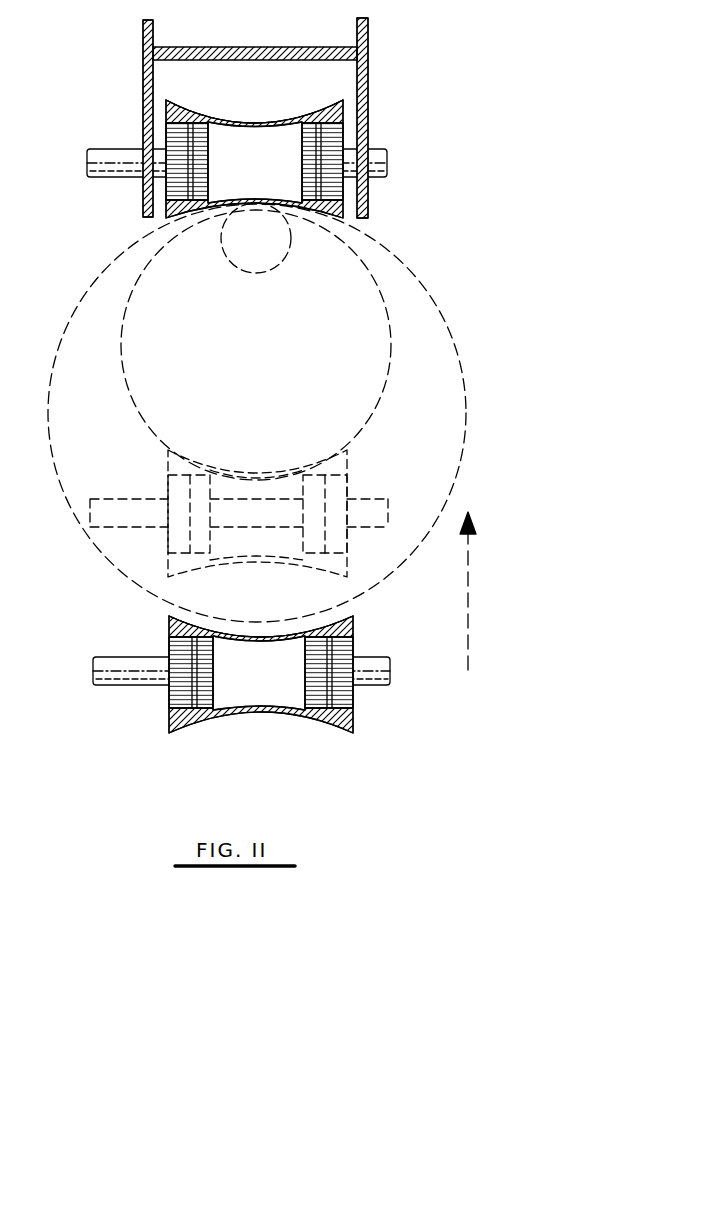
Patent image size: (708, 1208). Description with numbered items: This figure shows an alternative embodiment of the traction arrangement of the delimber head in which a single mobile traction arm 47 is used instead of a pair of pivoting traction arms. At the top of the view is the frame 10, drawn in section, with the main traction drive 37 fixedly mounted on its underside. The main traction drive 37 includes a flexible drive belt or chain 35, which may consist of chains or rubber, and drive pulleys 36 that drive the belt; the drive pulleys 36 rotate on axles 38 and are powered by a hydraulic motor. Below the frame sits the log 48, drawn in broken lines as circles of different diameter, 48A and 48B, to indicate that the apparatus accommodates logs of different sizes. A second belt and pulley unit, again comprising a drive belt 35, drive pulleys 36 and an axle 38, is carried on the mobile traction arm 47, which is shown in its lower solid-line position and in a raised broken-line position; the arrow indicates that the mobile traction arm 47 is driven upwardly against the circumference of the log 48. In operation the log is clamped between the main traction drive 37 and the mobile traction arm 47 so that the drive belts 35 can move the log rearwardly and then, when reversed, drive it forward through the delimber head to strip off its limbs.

The frame 10 is at (368, 71).
The flexible drive belt 35 is at (181, 113).
The drive pulley 36 is at (199, 146).
The main traction drive 37 is at (262, 111).
The axle 38 is at (108, 164).
The mobile traction arm 47 is at (158, 492).
The log 48 is at (465, 433).
The pipe inner circle 48A is at (146, 410).
The small pipe circle 48B is at (268, 272).